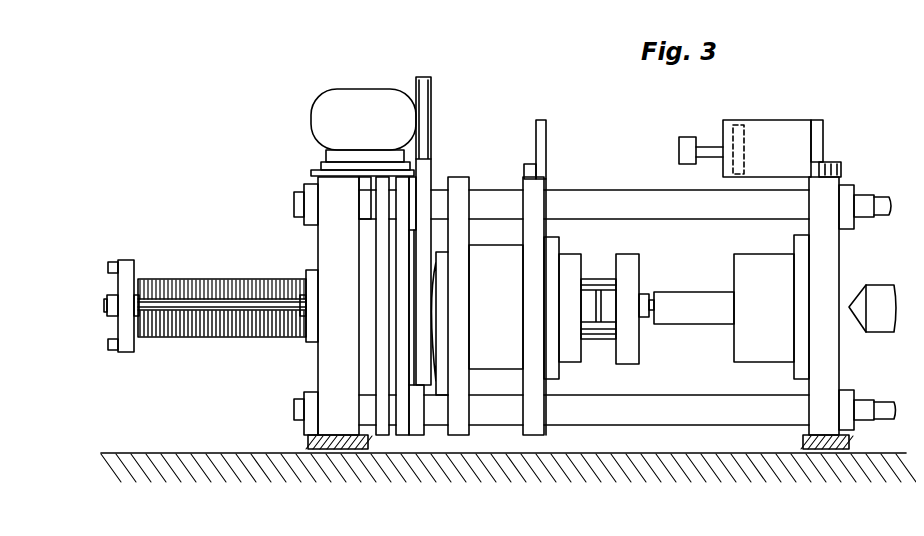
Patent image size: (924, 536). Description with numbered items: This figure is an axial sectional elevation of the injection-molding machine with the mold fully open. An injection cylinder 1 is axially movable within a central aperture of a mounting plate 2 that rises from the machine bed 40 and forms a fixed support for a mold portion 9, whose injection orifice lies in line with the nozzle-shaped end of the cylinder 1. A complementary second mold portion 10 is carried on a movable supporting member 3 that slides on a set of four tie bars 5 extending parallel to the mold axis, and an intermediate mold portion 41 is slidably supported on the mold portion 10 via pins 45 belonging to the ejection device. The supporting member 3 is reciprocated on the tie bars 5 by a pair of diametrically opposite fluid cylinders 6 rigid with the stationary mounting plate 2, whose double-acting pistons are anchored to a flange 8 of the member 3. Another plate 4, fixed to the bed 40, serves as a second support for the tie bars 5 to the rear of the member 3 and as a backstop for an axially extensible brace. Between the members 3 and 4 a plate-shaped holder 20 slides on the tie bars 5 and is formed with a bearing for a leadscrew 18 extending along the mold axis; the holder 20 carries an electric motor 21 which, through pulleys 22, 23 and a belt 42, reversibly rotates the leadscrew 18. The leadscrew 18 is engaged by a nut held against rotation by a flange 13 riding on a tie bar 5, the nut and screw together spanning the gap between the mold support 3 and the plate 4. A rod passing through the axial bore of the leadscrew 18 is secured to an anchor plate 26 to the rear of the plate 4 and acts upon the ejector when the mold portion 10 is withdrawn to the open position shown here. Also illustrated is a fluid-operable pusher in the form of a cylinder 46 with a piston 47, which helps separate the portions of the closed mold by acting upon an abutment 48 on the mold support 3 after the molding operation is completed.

The injection cylinder 1 is at (897, 310).
The mounting plate 2 is at (820, 352).
The movable supporting member 3 is at (528, 420).
The plate 4 is at (335, 413).
The tie bars 5 is at (797, 410).
The fluid cylinders 6 is at (688, 312).
The flange 8 is at (460, 323).
The mold portion 9 is at (763, 342).
The second mold portion 10 is at (572, 340).
The flange 13 is at (380, 420).
The leadscrew 18 is at (222, 332).
The plate-shaped holder 20 is at (403, 420).
The electric motor 21 is at (368, 92).
The pulley 22 is at (428, 105).
The pulley 23 is at (438, 250).
The anchor plate 26 is at (125, 333).
The machine bed 40 is at (188, 446).
The intermediate mold portion 41 is at (630, 252).
The belt 42 is at (423, 175).
The pins 45 is at (597, 277).
The cylinder 46 is at (786, 122).
The piston 47 is at (678, 148).
The abutment 48 is at (546, 130).